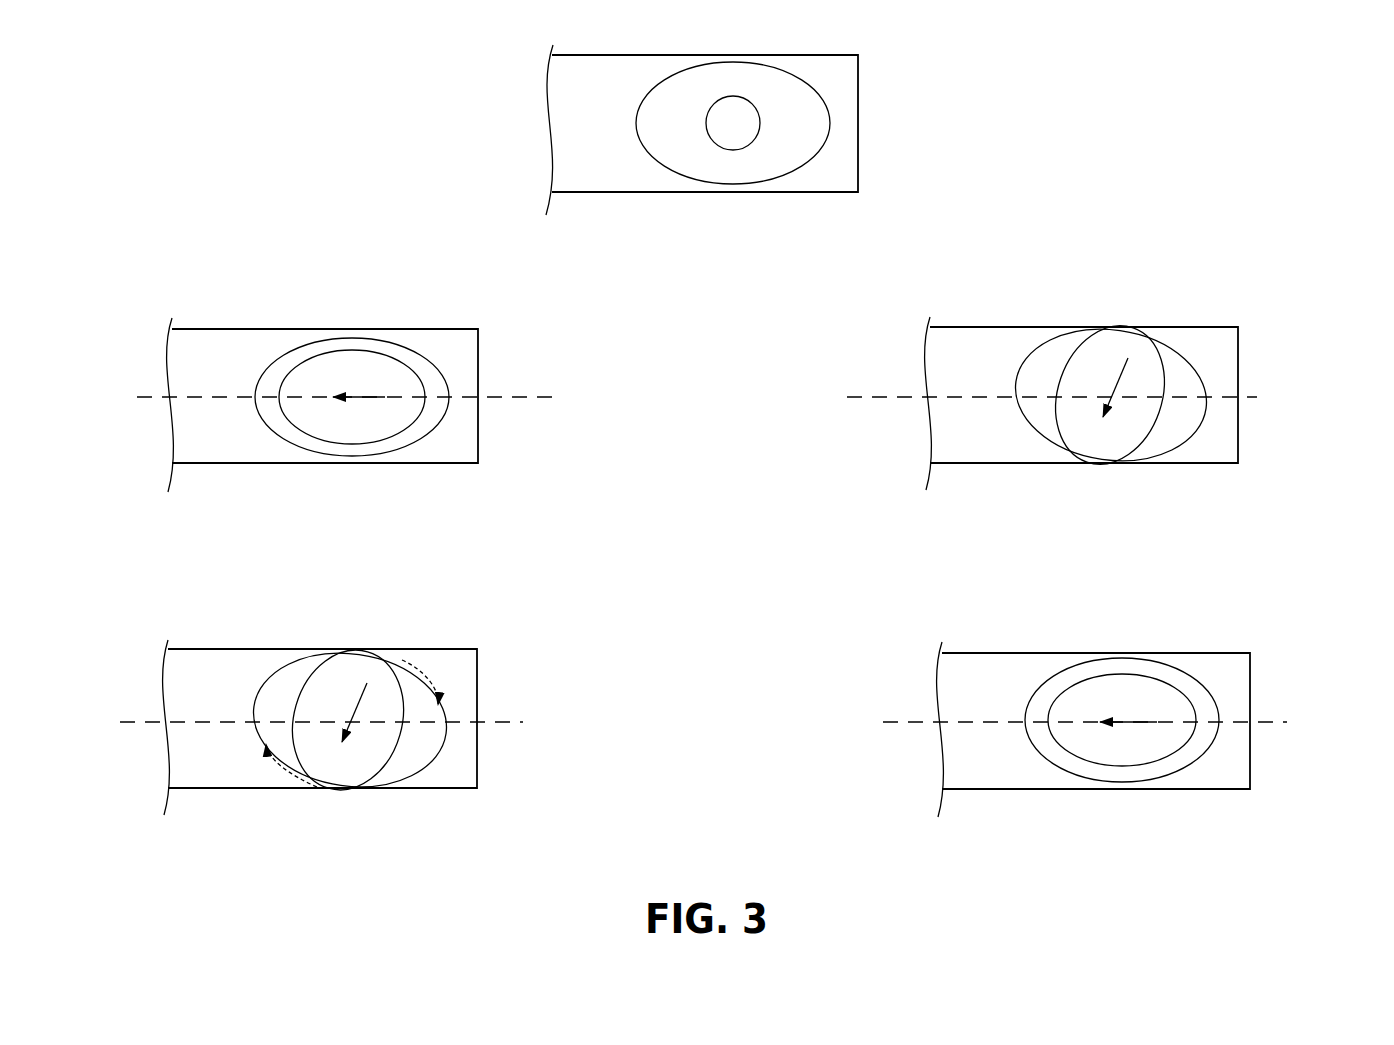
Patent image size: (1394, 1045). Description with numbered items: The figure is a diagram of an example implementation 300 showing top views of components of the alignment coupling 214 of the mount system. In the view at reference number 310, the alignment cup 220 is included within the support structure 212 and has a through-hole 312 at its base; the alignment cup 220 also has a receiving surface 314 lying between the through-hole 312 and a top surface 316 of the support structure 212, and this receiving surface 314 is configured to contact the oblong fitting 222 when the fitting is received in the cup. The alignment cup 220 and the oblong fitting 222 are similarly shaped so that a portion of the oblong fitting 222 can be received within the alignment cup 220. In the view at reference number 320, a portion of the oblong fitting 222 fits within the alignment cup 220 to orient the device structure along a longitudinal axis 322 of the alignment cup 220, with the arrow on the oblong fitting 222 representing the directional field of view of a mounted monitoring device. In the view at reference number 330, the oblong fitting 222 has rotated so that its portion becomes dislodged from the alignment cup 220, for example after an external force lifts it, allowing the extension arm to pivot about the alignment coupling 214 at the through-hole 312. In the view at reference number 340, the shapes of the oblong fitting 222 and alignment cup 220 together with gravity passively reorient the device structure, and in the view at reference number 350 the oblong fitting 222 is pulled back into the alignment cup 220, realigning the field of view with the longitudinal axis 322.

The example implementation 300 is at (198, 60).
The reference number 310 view 310 is at (671, 130).
The through-hole 312 is at (742, 122).
The receiving surface 314 is at (733, 167).
The top surface 316 is at (837, 175).
The support structure 212 is at (858, 58).
The alignment coupling 214 is at (246, 286).
The alignment cup 220 is at (830, 127).
The oblong fitting 222 is at (353, 440).
The reference number 320 view 320 is at (290, 405).
The longitudinal axis 322 is at (553, 399).
The reference number 330 view 330 is at (1051, 403).
The reference number 340 view 340 is at (286, 727).
The reference number 350 view 350 is at (1064, 729).